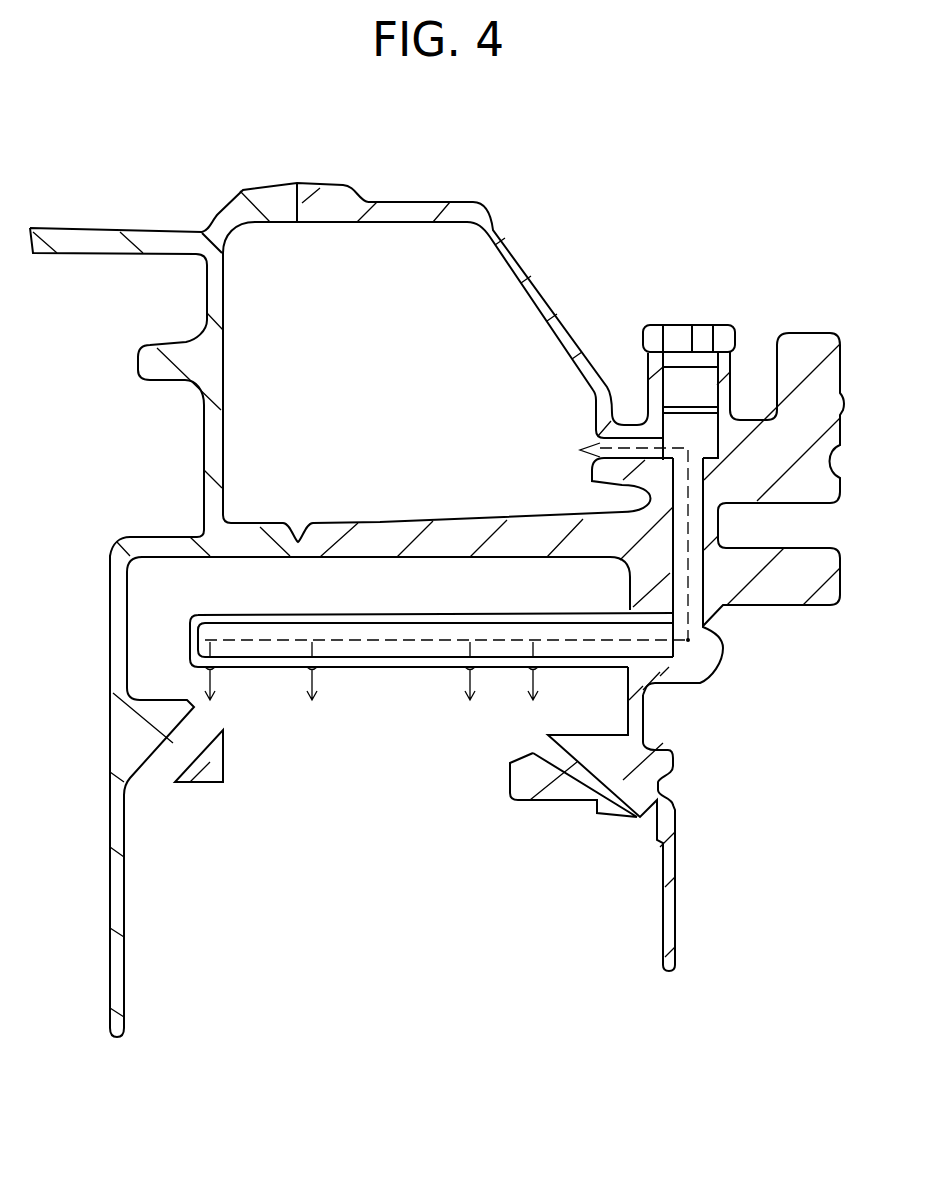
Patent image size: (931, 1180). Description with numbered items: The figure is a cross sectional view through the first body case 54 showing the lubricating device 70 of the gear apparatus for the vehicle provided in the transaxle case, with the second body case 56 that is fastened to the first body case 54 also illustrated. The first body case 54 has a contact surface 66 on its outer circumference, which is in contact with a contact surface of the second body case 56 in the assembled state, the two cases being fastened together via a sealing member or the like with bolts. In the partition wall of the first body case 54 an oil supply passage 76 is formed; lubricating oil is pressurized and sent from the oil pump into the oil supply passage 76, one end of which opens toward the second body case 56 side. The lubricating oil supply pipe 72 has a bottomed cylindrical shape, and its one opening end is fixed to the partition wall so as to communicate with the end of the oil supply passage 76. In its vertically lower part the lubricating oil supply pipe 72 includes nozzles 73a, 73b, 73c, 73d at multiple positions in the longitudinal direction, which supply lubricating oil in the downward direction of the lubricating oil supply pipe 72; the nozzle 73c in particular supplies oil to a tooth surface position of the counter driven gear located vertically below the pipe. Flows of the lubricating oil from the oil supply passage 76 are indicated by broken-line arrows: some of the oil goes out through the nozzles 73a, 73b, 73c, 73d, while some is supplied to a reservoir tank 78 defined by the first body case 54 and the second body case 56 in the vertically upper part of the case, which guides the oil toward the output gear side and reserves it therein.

The first body case 54 is at (408, 212).
The second body case 56 is at (185, 243).
The contact surface 66 is at (291, 214).
The lubricating device 70 is at (180, 572).
The lubricating oil supply pipe 72 is at (377, 614).
The nozzle 73a is at (212, 670).
The nozzle 73b is at (314, 670).
The nozzle 73c is at (468, 672).
The nozzle 73d is at (535, 670).
The oil supply passage 76 is at (687, 672).
The reservoir tank 78 is at (418, 393).